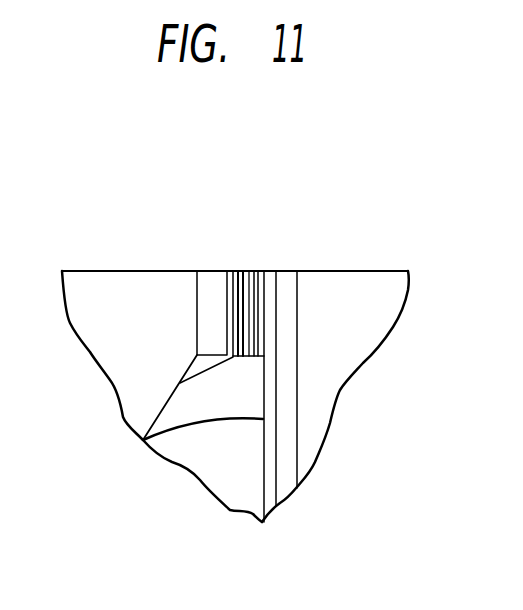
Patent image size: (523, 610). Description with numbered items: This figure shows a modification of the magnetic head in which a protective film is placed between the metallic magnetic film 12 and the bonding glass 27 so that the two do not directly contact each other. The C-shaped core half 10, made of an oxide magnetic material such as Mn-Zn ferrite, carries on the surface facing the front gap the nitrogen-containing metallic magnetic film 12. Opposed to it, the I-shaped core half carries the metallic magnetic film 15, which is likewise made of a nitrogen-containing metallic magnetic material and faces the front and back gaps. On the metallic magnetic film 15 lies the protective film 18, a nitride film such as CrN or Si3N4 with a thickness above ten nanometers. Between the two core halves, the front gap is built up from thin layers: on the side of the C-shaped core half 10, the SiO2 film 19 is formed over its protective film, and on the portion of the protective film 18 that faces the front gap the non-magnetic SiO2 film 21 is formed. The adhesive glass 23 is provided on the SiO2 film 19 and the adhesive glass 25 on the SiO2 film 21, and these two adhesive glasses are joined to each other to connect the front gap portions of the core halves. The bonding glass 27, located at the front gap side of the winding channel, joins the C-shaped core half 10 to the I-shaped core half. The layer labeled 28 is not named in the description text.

The C-shaped core half 10 is at (140, 288).
The metallic magnetic film 12 is at (208, 278).
The metallic magnetic film 15 is at (282, 276).
The protective film 18 is at (267, 272).
The SiO2 film 19 is at (237, 273).
The SiO2 film 21 is at (255, 272).
The adhesive glass 23 is at (243, 273).
The adhesive glass 25 is at (252, 275).
The bonding glass 27 is at (207, 408).
The lower magnetic pole 28 is at (232, 273).